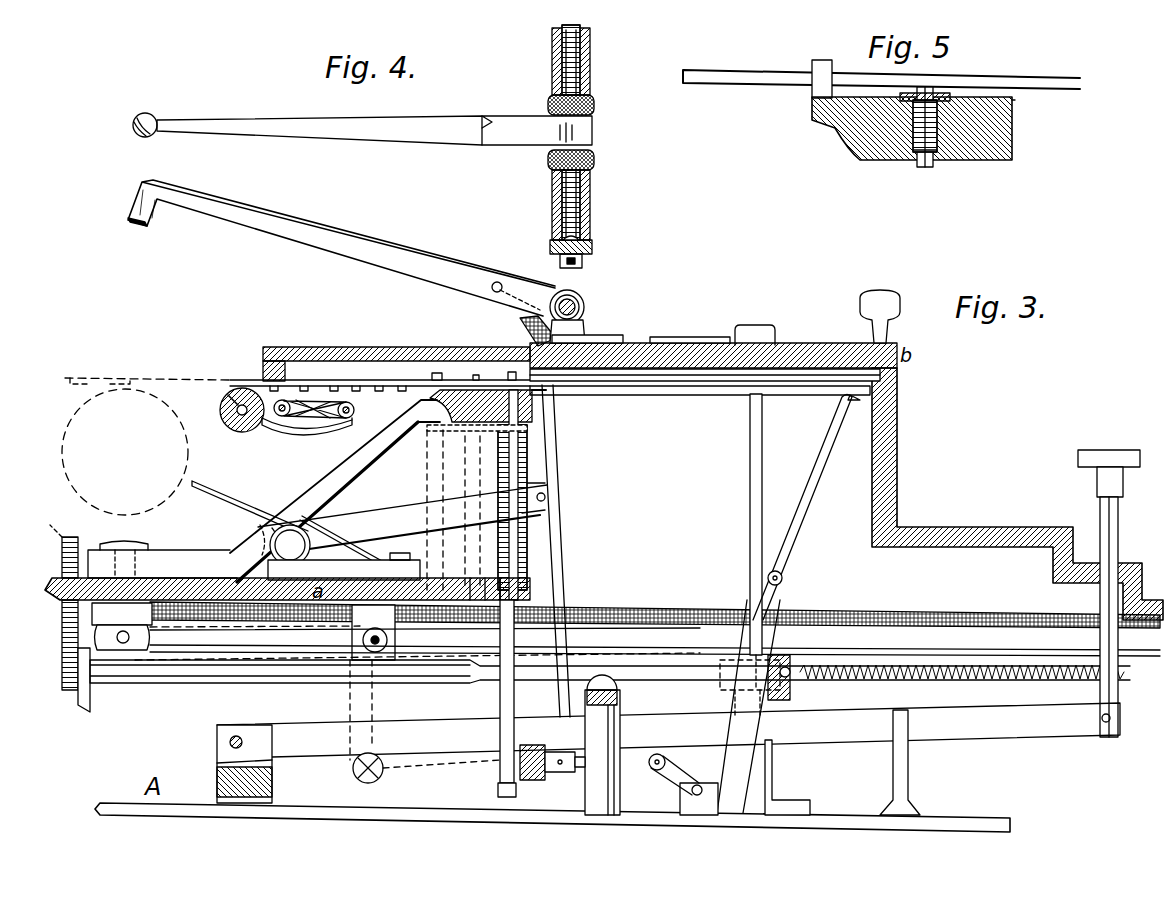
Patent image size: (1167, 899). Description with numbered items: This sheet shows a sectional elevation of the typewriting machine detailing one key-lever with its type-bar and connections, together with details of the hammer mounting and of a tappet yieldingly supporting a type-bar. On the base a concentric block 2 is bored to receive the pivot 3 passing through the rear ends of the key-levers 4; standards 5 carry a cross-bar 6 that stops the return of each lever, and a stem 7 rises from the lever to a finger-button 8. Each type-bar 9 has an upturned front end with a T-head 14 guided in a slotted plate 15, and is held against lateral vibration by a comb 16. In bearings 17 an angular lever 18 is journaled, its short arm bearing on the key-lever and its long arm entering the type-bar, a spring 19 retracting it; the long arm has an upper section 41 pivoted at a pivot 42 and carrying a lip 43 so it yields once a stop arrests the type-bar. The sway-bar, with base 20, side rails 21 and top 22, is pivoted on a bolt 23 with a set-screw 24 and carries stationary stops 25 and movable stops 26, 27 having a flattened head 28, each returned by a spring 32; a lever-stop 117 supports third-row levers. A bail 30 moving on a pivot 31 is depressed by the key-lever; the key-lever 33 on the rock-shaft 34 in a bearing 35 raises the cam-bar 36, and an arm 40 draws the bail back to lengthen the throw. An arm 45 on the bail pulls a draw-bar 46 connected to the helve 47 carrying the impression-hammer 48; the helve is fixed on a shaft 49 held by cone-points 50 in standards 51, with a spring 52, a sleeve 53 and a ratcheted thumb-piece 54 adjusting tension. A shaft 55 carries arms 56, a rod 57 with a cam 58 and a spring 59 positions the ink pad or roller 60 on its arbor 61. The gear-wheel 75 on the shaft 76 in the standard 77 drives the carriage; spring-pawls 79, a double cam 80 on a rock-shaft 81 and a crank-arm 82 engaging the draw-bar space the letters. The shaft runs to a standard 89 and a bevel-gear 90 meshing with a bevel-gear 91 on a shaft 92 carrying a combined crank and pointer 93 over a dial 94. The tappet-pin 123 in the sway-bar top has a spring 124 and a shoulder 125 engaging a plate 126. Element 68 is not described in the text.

In FIG. 3, the concentric block 2 is at (232, 764).
In FIG. 3, the pivot 3 is at (229, 742).
In FIG. 3, the key-lever 4 is at (668, 759).
In FIG. 3, the standard 5 is at (602, 752).
In FIG. 3, the cross-bar 6 is at (612, 690).
In FIG. 3, the stem 7 is at (1119, 617).
In FIG. 3, the finger-button 8 is at (1109, 461).
In FIG. 5, the type-bar 9 is at (881, 89).
In FIG. 3, the type-bar 9 is at (705, 391).
In FIG. 3, the T-head 14 is at (900, 384).
In FIG. 3, the plate 15 is at (728, 390).
In FIG. 3, the comb 16 is at (263, 360).
In FIG. 3, the bearing 17 is at (699, 806).
In FIG. 3, the angular lever 18 is at (741, 706).
In FIG. 3, the spring 19 is at (962, 684).
In FIG. 3, the base of sway-bar 20 is at (162, 564).
In FIG. 3, the side rail 21 is at (335, 491).
In FIG. 5, the top of sway-bar 22 is at (927, 128).
In FIG. 3, the top of sway-bar 22 is at (432, 397).
In FIG. 3, the bolt 23 is at (122, 626).
In FIG. 3, the set-screw 24 is at (131, 549).
In FIG. 5, the stationary stop 25 is at (820, 67).
In FIG. 3, the stationary stop 25 is at (420, 371).
In FIG. 3, the movable stop 26 is at (475, 484).
In FIG. 3, the movable stop 27 is at (566, 462).
In FIG. 3, the flattened head 28 is at (548, 392).
In FIG. 3, the bail 30 is at (534, 775).
In FIG. 3, the pivot 31 is at (425, 734).
In FIG. 3, the spring 32 is at (556, 538).
In FIG. 3, the key-lever 33 is at (655, 624).
In FIG. 3, the rock-shaft 34 is at (373, 640).
In FIG. 3, the bearing 35 is at (373, 631).
In FIG. 3, the cam-bar 36 is at (647, 643).
In FIG. 3, the arm 40 is at (388, 690).
In FIG. 3, the upper section 41 is at (802, 508).
In FIG. 3, the pivot 42 is at (783, 578).
In FIG. 3, the lip 43 is at (720, 670).
In FIG. 3, the arm 45 is at (565, 779).
In FIG. 3, the draw-bar 46 is at (566, 551).
In FIG. 4, the helve 47 is at (374, 136).
In FIG. 3, the helve 47 is at (342, 263).
In FIG. 4, the impression-hammer 48 is at (147, 134).
In FIG. 3, the impression-hammer 48 is at (148, 232).
In FIG. 4, the shaft 49 is at (585, 66).
In FIG. 3, the shaft 49 is at (586, 306).
In FIG. 4, the cone-point 50 is at (592, 246).
In FIG. 4, the standard 51 is at (582, 260).
In FIG. 3, the standard 51 is at (586, 326).
In FIG. 4, the spring 52 is at (585, 48).
In FIG. 4, the sleeve 53 is at (592, 82).
In FIG. 4, the thumb-piece 54 is at (594, 160).
In FIG. 3, the shaft 55 is at (331, 401).
In FIG. 3, the arm 56 is at (307, 433).
In FIG. 3, the rod 57 is at (282, 416).
In FIG. 3, the cam 58 is at (300, 420).
In FIG. 3, the spring 59 is at (315, 431).
In FIG. 3, the ink pad or roller 60 is at (242, 420).
In FIG. 3, the arbor 61 is at (226, 418).
In FIG. 3, the roll 68 is at (146, 446).
In FIG. 3, the gear-wheel 75 is at (68, 542).
In FIG. 3, the shaft 76 is at (610, 682).
In FIG. 3, the standard 77 is at (87, 656).
In FIG. 3, the spring-pawl 79 is at (250, 506).
In FIG. 3, the double cam 80 is at (305, 527).
In FIG. 3, the rock-shaft 81 is at (344, 552).
In FIG. 3, the crank-arm 82 is at (402, 519).
In FIG. 3, the standard 89 is at (729, 777).
In FIG. 3, the bevel-gear 90 is at (790, 690).
In FIG. 3, the bevel-gear 91 is at (792, 651).
In FIG. 3, the shaft 92 is at (737, 542).
In FIG. 3, the combined crank and pointer 93 is at (817, 317).
In FIG. 3, the dial 94 is at (660, 337).
In FIG. 3, the lever-stop 117 is at (419, 510).
In FIG. 5, the tappet-pin 123 is at (926, 139).
In FIG. 3, the tappet-pin 123 is at (477, 495).
In FIG. 5, the spring 124 is at (913, 152).
In FIG. 5, the shoulder 125 is at (1014, 102).
In FIG. 5, the plate 126 is at (950, 96).